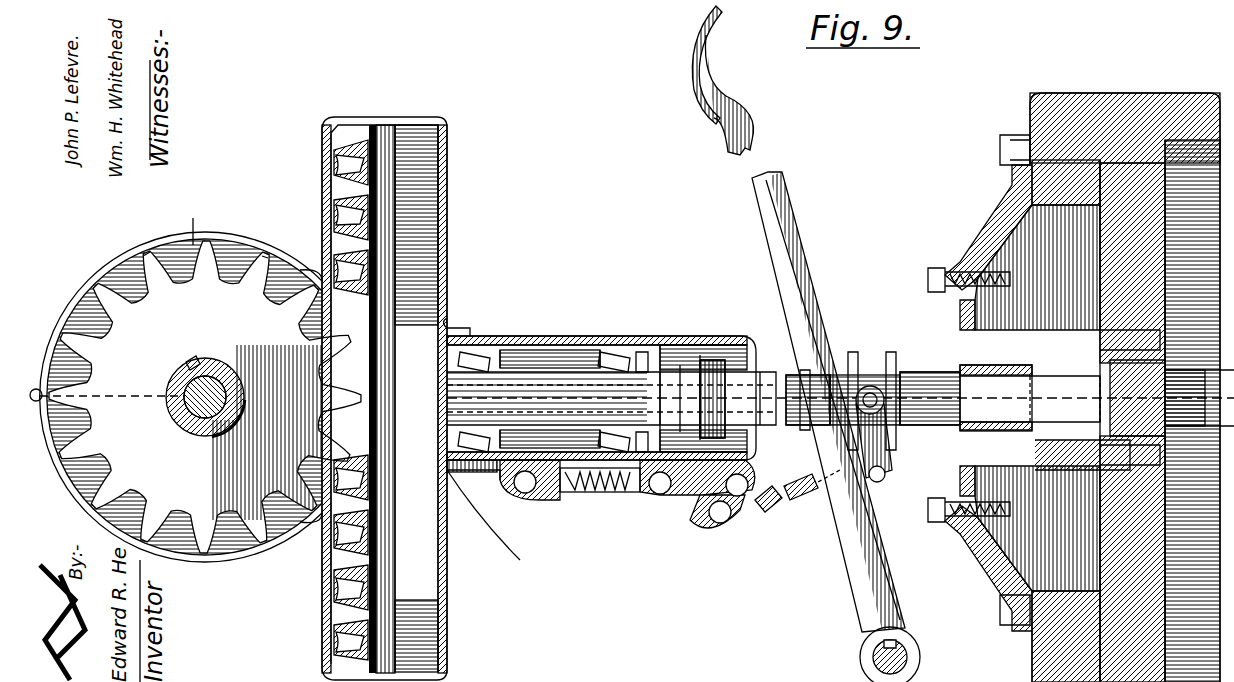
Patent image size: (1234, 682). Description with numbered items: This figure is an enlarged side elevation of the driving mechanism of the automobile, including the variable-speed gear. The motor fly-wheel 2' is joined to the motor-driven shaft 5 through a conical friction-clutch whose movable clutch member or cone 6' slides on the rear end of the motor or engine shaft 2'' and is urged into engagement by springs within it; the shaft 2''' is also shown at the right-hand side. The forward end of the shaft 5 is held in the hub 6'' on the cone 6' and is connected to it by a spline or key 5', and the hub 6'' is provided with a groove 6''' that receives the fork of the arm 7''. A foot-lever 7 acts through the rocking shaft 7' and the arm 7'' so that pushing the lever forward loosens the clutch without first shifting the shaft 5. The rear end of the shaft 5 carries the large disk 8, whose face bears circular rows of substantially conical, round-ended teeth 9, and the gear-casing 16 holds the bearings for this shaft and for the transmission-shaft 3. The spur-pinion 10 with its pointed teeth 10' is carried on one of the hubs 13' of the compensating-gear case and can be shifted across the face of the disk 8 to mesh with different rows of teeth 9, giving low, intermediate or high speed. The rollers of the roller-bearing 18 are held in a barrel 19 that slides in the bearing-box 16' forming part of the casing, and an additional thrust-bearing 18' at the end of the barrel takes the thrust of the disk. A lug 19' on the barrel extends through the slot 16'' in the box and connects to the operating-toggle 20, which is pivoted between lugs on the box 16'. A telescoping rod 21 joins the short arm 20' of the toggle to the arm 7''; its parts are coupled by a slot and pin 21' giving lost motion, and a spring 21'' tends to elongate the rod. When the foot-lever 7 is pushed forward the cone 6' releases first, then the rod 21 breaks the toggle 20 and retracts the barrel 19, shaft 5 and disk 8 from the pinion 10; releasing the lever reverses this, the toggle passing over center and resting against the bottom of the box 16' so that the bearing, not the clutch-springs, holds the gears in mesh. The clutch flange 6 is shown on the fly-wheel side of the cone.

The motor fly-wheel 2' is at (1125, 373).
The motor or engine shaft 2'' is at (1172, 398).
The shaft 2''' is at (1030, 399).
The transmission-shaft 3 is at (232, 380).
The motor-driven shaft 5 is at (840, 399).
The spline or key 5' is at (966, 384).
The cone flange 6 is at (1022, 383).
The clutch member or cone 6' is at (1044, 419).
The hub 6'' is at (868, 385).
The groove 6''' is at (829, 376).
The foot-lever 7 is at (798, 319).
The rocking shaft 7' is at (876, 654).
The arm 7'' is at (888, 445).
The disk 8 is at (392, 318).
The teeth 9 is at (332, 158).
The spur-pinion 10 is at (205, 397).
The gear teeth 10' is at (221, 420).
The hubs of the compensating-gear case 13' is at (198, 347).
The gear-casing 16 is at (192, 390).
The bearing-box 16' is at (600, 387).
The slot 16'' is at (483, 510).
The roller-bearing 18 is at (550, 381).
The thrust-bearing 18' is at (658, 381).
The barrel 19 is at (550, 379).
The lug 19' is at (542, 493).
The operating-toggle 20 is at (603, 500).
The short arm of the toggle 20' is at (697, 510).
The telescoping rod 21 is at (801, 501).
The slot and pin 21' is at (813, 466).
The spring 21'' is at (763, 512).